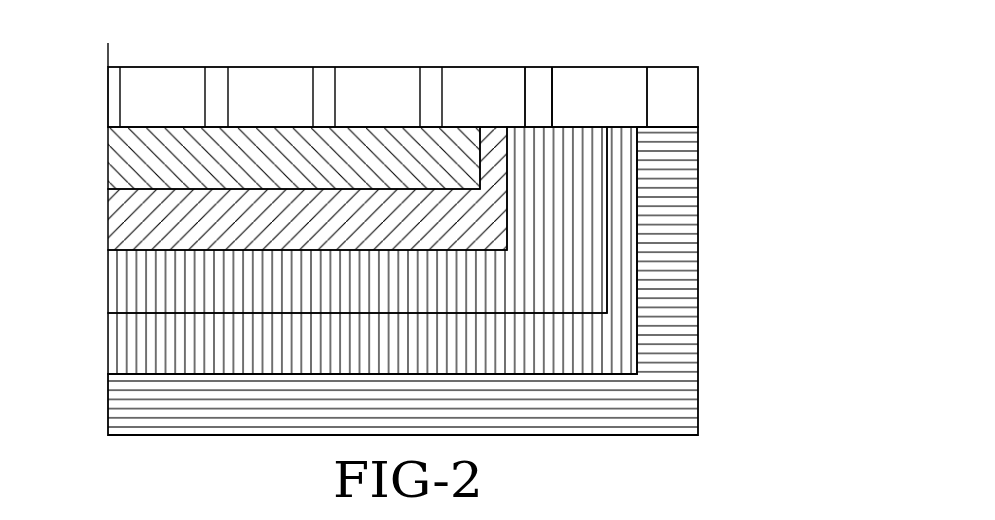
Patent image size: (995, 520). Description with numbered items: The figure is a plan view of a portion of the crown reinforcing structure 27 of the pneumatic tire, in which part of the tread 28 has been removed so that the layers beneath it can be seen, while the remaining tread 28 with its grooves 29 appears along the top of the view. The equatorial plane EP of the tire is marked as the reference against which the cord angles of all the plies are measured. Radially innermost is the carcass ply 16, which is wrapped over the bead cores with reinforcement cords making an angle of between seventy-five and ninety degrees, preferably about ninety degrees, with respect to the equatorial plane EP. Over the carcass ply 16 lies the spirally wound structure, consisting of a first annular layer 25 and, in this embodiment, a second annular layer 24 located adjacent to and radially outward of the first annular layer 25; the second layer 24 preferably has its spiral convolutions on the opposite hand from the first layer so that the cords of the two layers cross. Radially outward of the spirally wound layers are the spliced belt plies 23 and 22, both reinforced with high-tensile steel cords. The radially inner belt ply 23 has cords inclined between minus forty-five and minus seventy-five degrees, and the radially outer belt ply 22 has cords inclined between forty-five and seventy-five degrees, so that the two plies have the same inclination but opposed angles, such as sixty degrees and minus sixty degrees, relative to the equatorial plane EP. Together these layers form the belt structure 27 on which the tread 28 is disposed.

The carcass ply 16 is at (673, 282).
The radially outer belt ply 22 is at (195, 155).
The radially inner belt ply 23 is at (292, 227).
The second annular layer 24 is at (143, 283).
The first annular layer 25 is at (143, 352).
The crown reinforcing structure 27 is at (200, 371).
The tread 28 is at (605, 88).
The grooves 29 is at (535, 95).
The equatorial plane EP is at (106, 43).